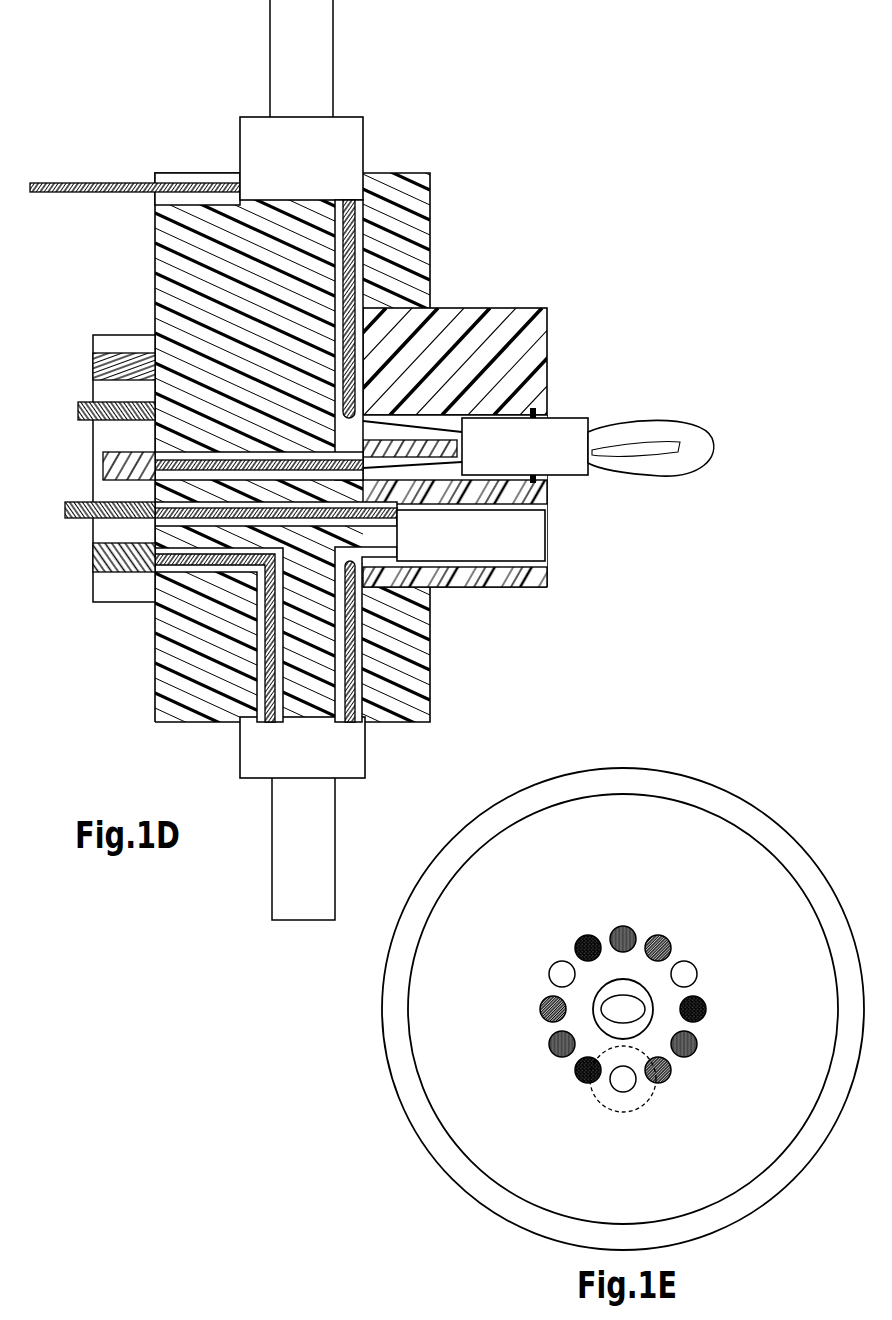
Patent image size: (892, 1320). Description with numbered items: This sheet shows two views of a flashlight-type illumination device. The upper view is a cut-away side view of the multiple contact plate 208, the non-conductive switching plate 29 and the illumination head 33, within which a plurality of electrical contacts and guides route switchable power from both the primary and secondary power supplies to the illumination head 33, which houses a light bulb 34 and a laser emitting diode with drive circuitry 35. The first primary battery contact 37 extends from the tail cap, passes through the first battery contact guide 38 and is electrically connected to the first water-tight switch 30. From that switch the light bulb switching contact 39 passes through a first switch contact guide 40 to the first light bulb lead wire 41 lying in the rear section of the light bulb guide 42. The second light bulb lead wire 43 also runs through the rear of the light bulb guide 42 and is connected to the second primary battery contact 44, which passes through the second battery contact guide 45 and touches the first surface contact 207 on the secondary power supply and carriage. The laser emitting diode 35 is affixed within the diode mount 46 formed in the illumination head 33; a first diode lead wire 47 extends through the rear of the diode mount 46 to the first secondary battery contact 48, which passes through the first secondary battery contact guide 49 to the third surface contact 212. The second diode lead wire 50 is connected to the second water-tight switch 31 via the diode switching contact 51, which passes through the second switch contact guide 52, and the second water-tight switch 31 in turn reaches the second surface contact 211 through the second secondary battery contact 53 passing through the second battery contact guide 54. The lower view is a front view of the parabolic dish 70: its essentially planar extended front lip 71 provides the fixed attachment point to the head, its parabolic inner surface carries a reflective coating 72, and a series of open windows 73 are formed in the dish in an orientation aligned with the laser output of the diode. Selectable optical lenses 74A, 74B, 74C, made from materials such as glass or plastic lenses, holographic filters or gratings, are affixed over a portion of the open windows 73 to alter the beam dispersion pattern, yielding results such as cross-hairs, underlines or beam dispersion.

In FIG. 1D, the non-conductive switching plate 29 is at (419, 158).
In FIG. 1D, the first water-tight switch 30 is at (301, 100).
In FIG. 1D, the second water-tight switch 31 is at (302, 818).
In FIG. 1D, the illumination head 33 is at (466, 407).
In FIG. 1D, the light bulb 34 is at (525, 446).
In FIG. 1E, the light bulb 34 is at (623, 1009).
In FIG. 1D, the laser emitting diode with drive circuitry 35 is at (471, 535).
In FIG. 1E, the laser emitting diode with drive circuitry 35 is at (624, 1112).
In FIG. 1D, the first primary battery contact 37 is at (83, 182).
In FIG. 1D, the first battery contact guide 38 is at (171, 203).
In FIG. 1D, the light bulb switching contact 39 is at (342, 340).
In FIG. 1D, the first switch contact guide 40 is at (348, 277).
In FIG. 1D, the first light bulb lead wire 41 is at (419, 417).
In FIG. 1D, the light bulb guide 42 is at (550, 415).
In FIG. 1D, the second light bulb lead wire 43 is at (394, 482).
In FIG. 1D, the second primary battery contact 44 is at (259, 445).
In FIG. 1D, the second battery contact guide 45 is at (290, 460).
In FIG. 1D, the diode mount 46 is at (548, 563).
In FIG. 1D, the first diode lead wire 47 is at (279, 526).
In FIG. 1D, the first secondary battery contact 48 is at (170, 520).
In FIG. 1D, the first secondary battery contact guide 49 is at (270, 552).
In FIG. 1D, the second diode lead wire 50 is at (378, 634).
In FIG. 1D, the diode switching contact 51 is at (350, 665).
In FIG. 1D, the second switch contact guide 52 is at (336, 658).
In FIG. 1D, the second secondary battery contact 53 is at (266, 690).
In FIG. 1D, the second battery contact guide 54 is at (206, 580).
In FIG. 1D, the first surface contact 207 is at (118, 466).
In FIG. 1D, the multiple contact plate 208 is at (82, 441).
In FIG. 1D, the second surface contact 211 is at (102, 366).
In FIG. 1D, the third surface contact 212 is at (80, 411).
In FIG. 1E, the parabolic dish 70 is at (623, 1005).
In FIG. 1E, the extended front lip 71 is at (623, 1009).
In FIG. 1E, the reflective coating 72 is at (623, 1009).
In FIG. 1E, the open windows 73 is at (553, 965).
In FIG. 1E, the selectable optical lens 74A is at (578, 940).
In FIG. 1E, the selectable optical lens 74B is at (633, 928).
In FIG. 1E, the selectable optical lens 74C is at (663, 937).